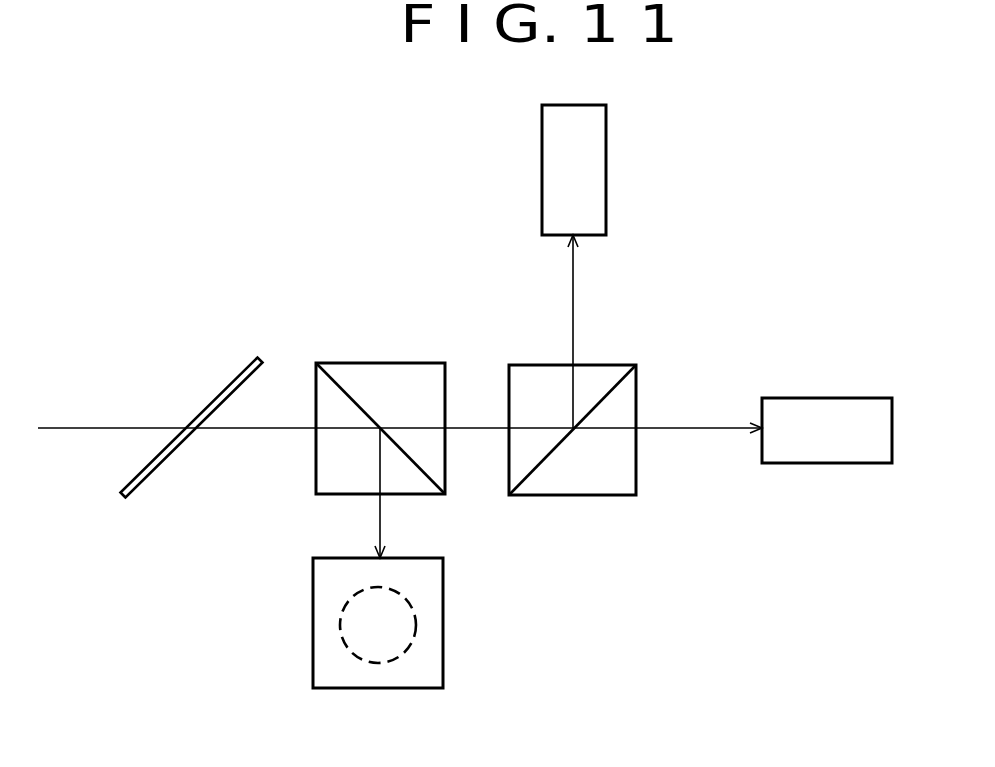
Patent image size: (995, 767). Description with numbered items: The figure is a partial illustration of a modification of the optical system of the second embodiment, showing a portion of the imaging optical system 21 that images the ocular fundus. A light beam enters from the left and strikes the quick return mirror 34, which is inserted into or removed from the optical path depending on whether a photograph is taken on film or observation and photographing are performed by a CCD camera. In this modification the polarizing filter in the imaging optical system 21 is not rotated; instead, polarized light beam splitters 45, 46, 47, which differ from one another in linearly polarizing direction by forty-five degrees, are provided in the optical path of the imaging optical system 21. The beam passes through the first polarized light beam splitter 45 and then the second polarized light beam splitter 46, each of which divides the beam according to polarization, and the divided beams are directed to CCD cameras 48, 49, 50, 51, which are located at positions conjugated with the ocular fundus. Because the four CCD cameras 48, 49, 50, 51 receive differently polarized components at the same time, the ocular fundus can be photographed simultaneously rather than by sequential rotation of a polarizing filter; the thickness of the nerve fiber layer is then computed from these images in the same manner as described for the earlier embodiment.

The imaging optical system 21 is at (332, 295).
The quick return mirror 34 is at (232, 373).
The polarized light beam splitter 45 is at (398, 363).
The polarized light beam splitter 46 is at (602, 495).
The polarized light beam splitter 47 is at (443, 618).
The CCD camera 48 is at (600, 181).
The CCD camera 49 is at (838, 412).
The CCD camera 50 is at (430, 670).
The CCD camera 51 is at (403, 652).